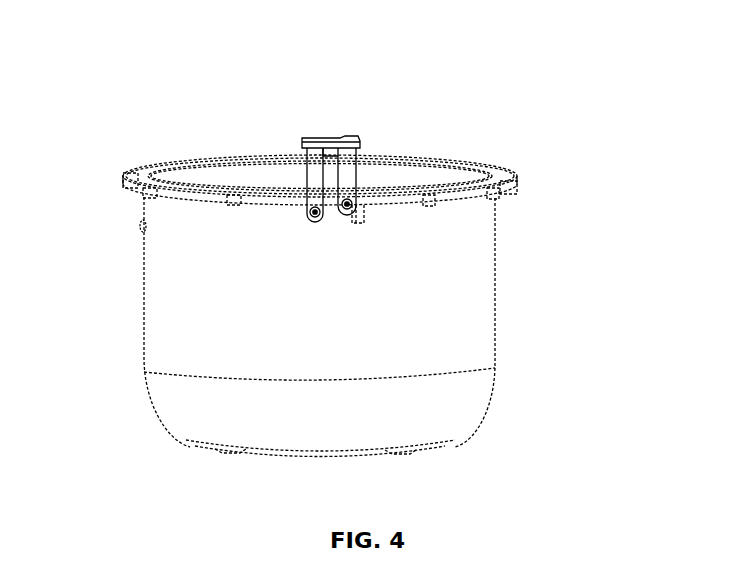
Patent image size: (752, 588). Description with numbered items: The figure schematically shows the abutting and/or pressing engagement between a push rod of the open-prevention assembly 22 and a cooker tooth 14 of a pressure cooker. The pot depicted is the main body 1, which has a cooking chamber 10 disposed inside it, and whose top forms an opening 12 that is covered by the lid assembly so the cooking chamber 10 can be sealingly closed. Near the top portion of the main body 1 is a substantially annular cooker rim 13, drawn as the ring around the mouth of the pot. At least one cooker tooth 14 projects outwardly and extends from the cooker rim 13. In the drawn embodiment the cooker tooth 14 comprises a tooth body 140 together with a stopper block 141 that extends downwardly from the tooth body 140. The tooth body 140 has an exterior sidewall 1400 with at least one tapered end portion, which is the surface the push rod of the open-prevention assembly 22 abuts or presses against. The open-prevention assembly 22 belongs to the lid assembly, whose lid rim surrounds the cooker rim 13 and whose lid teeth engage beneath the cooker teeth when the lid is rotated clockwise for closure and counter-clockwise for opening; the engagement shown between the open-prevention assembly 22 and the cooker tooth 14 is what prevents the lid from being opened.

The main body 1 is at (163, 332).
The cooking chamber 10 is at (212, 182).
The opening 12 is at (290, 158).
The cooker rim 13 is at (146, 190).
The cooker tooth 14 is at (512, 261).
The tooth body 140 is at (407, 207).
The stopper block 141 is at (362, 225).
The exterior sidewall 1400 is at (363, 205).
The open-prevention assembly 22 is at (333, 138).